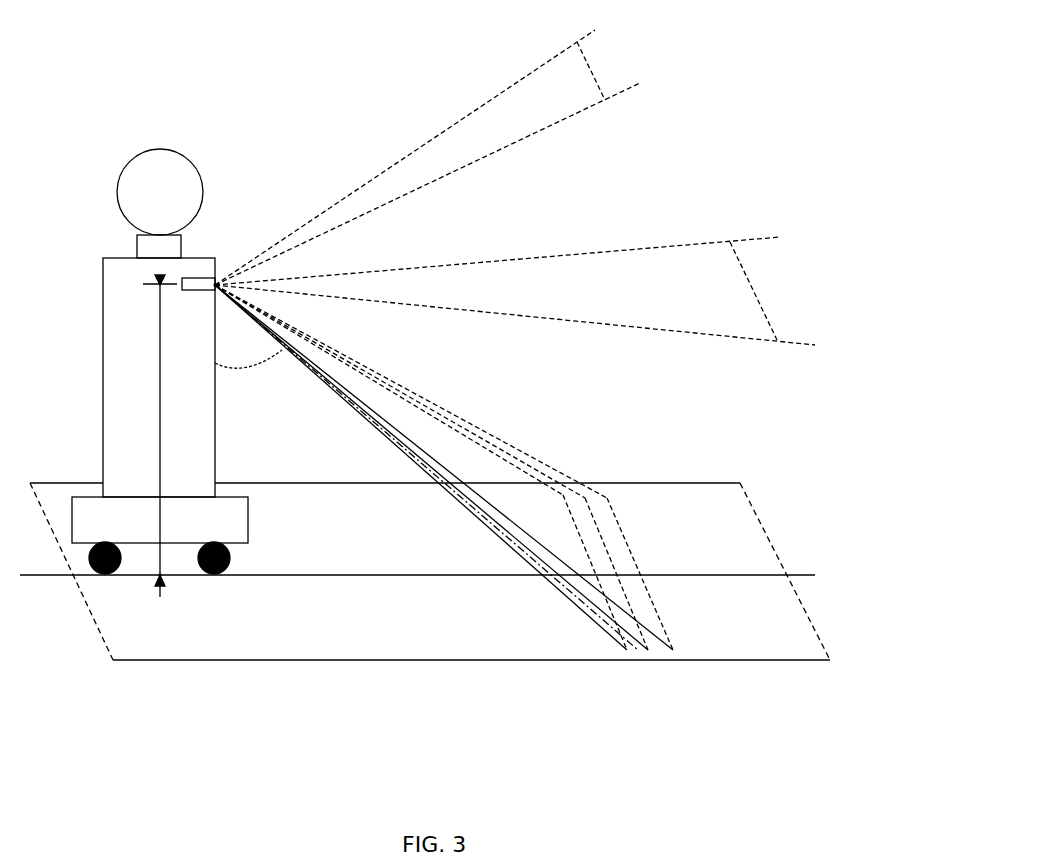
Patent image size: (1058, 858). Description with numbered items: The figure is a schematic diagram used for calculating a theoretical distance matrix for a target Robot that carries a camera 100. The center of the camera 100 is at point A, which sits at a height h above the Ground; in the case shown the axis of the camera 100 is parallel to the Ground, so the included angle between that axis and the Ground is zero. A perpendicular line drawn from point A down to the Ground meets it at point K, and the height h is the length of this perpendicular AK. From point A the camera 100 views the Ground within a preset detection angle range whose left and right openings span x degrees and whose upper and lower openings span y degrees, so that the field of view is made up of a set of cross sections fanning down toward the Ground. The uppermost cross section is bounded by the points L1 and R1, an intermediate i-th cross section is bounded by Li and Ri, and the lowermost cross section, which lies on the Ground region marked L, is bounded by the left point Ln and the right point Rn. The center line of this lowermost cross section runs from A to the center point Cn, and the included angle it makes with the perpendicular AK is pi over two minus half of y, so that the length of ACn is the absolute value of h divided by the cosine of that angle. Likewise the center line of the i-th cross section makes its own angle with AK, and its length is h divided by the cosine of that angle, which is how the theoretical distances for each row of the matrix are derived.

The camera 100 is at (192, 278).
The target robot Robot is at (145, 361).
The camera center point A is at (223, 300).
The height of the camera center from the ground h is at (164, 436).
The ground Ground is at (475, 577).
The foot of the perpendicular line on the ground K is at (194, 599).
The scanning plane region L is at (430, 571).
The left boundary of first scan line L1 is at (405, 151).
The right boundary of first scan line R1 is at (430, 184).
The left boundary of i-th scan line Li is at (497, 245).
The right boundary of i-th scan line Ri is at (515, 333).
The left end point of the lowermost cross section Ln is at (421, 467).
The right end point of the lowermost cross section Rn is at (421, 485).
The center point of the lowermost cross section Cn is at (426, 467).